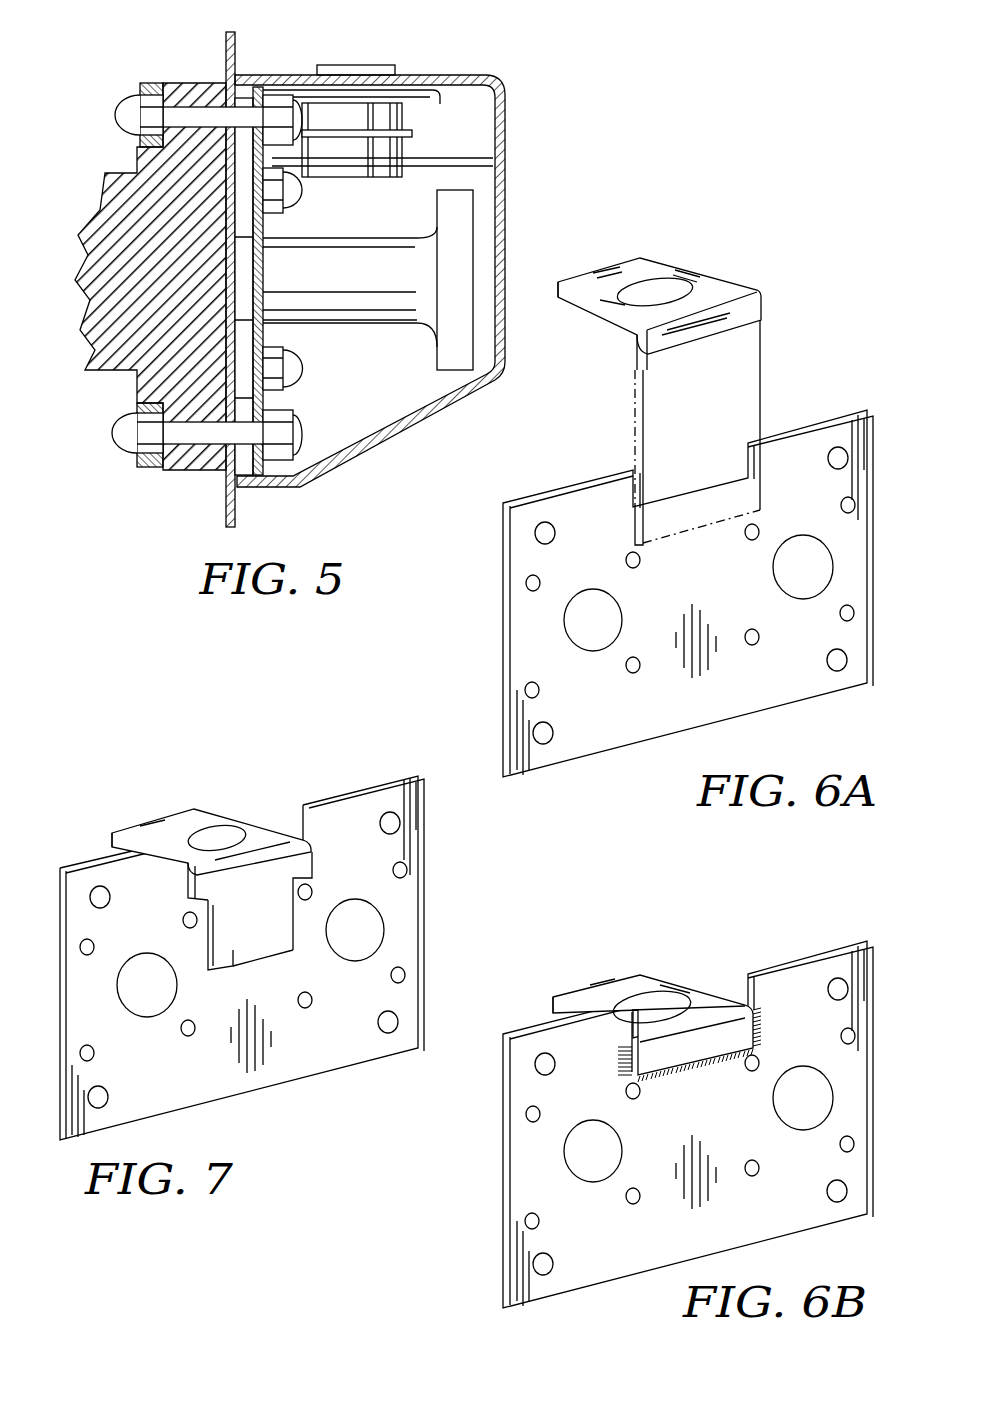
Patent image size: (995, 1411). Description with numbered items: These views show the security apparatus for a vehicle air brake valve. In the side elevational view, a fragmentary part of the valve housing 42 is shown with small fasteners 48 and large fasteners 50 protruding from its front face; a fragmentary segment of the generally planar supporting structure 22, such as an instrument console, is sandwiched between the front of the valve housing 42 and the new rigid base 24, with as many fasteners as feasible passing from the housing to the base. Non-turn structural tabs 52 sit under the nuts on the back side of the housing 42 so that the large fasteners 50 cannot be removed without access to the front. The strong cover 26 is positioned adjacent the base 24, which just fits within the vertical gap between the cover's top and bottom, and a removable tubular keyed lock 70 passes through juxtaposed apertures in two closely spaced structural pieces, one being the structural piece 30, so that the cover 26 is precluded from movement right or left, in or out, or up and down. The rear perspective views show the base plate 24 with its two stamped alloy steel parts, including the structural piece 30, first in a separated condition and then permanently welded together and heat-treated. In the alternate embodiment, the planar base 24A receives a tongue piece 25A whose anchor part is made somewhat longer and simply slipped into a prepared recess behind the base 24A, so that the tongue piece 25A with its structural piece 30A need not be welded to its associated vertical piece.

In FIG. 5, the supporting structure 22 is at (233, 500).
In FIG. 5, the rigid base 24 is at (263, 335).
In FIG. 6A, the rigid base 24 is at (732, 697).
In FIG. 6B, the rigid base 24 is at (782, 1215).
In FIG. 7, the planar base 24A is at (293, 1053).
In FIG. 7, the tongue piece 25A is at (233, 953).
In FIG. 5, the cover 26 is at (470, 77).
In FIG. 6A, the structural piece 30 is at (707, 285).
In FIG. 6B, the structural piece 30 is at (712, 1003).
In FIG. 7, the clip / nut retainer (alternate) 30A is at (270, 840).
In FIG. 5, the valve housing 42 is at (200, 82).
In FIG. 5, the small fasteners 48 is at (290, 193).
In FIG. 5, the large fasteners 50 is at (280, 97).
In FIG. 5, the structural tabs 52 is at (140, 82).
In FIG. 5, the lock 70 is at (355, 65).